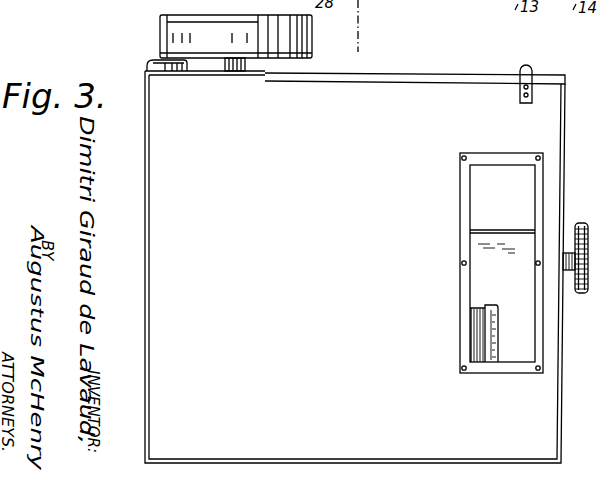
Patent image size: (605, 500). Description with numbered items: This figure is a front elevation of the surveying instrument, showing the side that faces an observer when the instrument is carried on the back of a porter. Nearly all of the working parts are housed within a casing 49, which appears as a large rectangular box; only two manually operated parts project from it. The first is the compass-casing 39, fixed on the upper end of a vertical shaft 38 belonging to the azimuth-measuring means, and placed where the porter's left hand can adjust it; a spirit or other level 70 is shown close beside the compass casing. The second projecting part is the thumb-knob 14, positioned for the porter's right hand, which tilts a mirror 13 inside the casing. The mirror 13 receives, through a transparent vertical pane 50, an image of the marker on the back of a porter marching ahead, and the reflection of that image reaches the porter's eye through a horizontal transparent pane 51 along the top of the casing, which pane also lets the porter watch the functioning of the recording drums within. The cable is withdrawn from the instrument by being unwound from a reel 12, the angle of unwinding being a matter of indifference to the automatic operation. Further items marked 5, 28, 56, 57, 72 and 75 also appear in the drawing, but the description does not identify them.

The section line arrow 5 is at (370, 7).
The reel 12 is at (495, 355).
The mirror 13 is at (483, 257).
The thumb-knob 14 is at (581, 295).
The roll 28 is at (236, 36).
The vertical shaft 38 is at (228, 63).
The compass-casing 39 is at (311, 54).
The casing 49 is at (355, 267).
The transparent vertical pane 50 is at (483, 191).
The horizontal transparent pane 51 is at (458, 78).
The member 56 is at (548, 9).
The member 57 is at (465, 29).
The level 70 is at (148, 66).
The member 72 is at (454, 26).
The member 75 is at (458, 0).